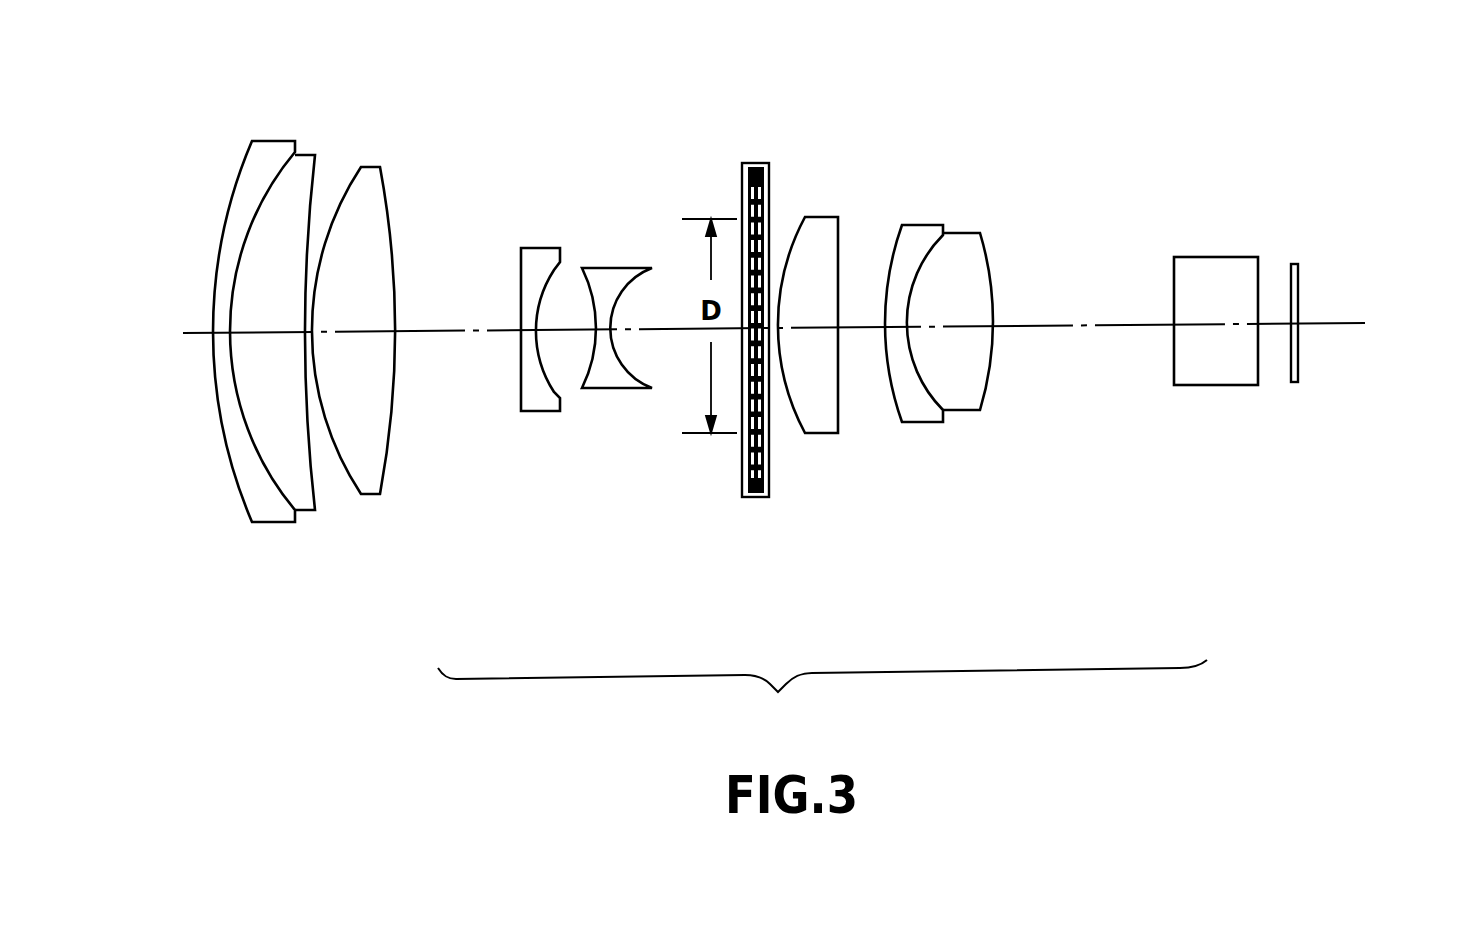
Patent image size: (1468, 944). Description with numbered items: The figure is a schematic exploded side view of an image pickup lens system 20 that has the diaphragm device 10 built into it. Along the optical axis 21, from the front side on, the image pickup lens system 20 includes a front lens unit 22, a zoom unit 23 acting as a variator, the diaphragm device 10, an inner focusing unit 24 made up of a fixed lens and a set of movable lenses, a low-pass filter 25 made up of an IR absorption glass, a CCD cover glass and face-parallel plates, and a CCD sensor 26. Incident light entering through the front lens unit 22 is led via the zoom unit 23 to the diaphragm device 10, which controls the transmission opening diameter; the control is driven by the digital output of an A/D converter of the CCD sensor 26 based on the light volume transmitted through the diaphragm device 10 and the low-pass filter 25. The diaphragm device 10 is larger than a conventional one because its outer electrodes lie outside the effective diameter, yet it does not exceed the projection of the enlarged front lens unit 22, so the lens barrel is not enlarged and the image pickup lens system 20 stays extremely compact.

The diaphragm device 10 is at (765, 155).
The image pickup lens system 20 is at (803, 726).
The optical axis 21 is at (1347, 322).
The front lens unit 22 is at (313, 127).
The zoom unit 23 is at (590, 232).
The inner focusing unit 24 is at (860, 202).
The low-pass filter 25 is at (1207, 257).
The CCD sensor 26 is at (1298, 272).